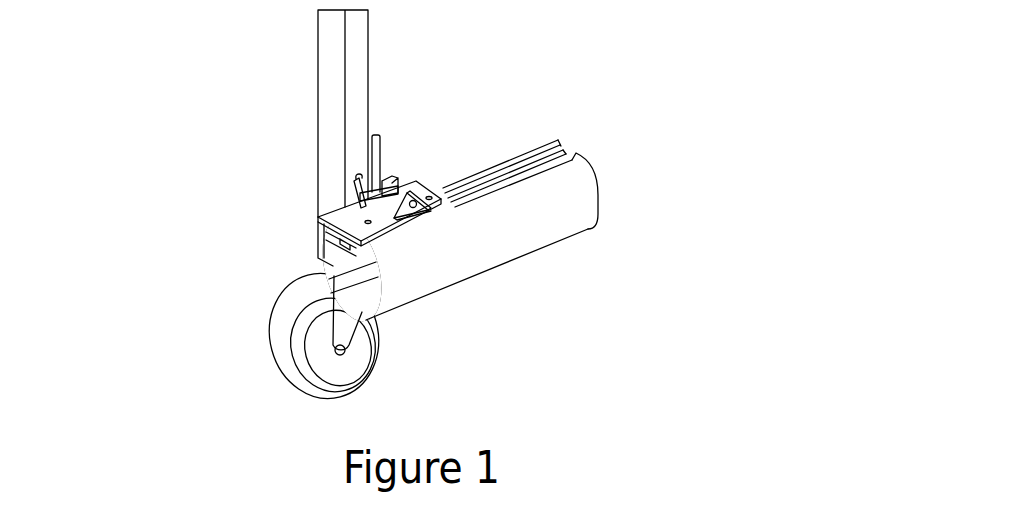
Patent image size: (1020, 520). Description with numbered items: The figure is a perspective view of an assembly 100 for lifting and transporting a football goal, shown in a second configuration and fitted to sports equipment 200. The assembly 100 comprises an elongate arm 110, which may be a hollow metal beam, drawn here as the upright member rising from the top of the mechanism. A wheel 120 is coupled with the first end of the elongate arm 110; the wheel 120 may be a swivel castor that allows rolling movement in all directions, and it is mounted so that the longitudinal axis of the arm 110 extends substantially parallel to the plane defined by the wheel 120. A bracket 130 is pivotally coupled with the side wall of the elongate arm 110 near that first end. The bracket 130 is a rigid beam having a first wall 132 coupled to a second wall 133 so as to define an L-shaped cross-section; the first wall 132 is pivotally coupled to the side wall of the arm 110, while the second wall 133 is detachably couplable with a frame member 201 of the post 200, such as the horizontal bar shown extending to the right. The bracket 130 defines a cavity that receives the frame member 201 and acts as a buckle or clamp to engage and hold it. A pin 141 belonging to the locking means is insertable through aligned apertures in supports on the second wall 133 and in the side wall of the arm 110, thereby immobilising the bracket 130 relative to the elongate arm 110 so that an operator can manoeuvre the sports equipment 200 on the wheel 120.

The assembly 100 is at (593, 74).
The elongate arm 110 is at (304, 94).
The wheel 120 is at (264, 343).
The bracket 130 is at (395, 164).
The first wall 132 is at (323, 236).
The second wall 133 is at (422, 185).
The pin 141 is at (386, 196).
The sports equipment 200 is at (594, 241).
The frame member 201 is at (522, 242).